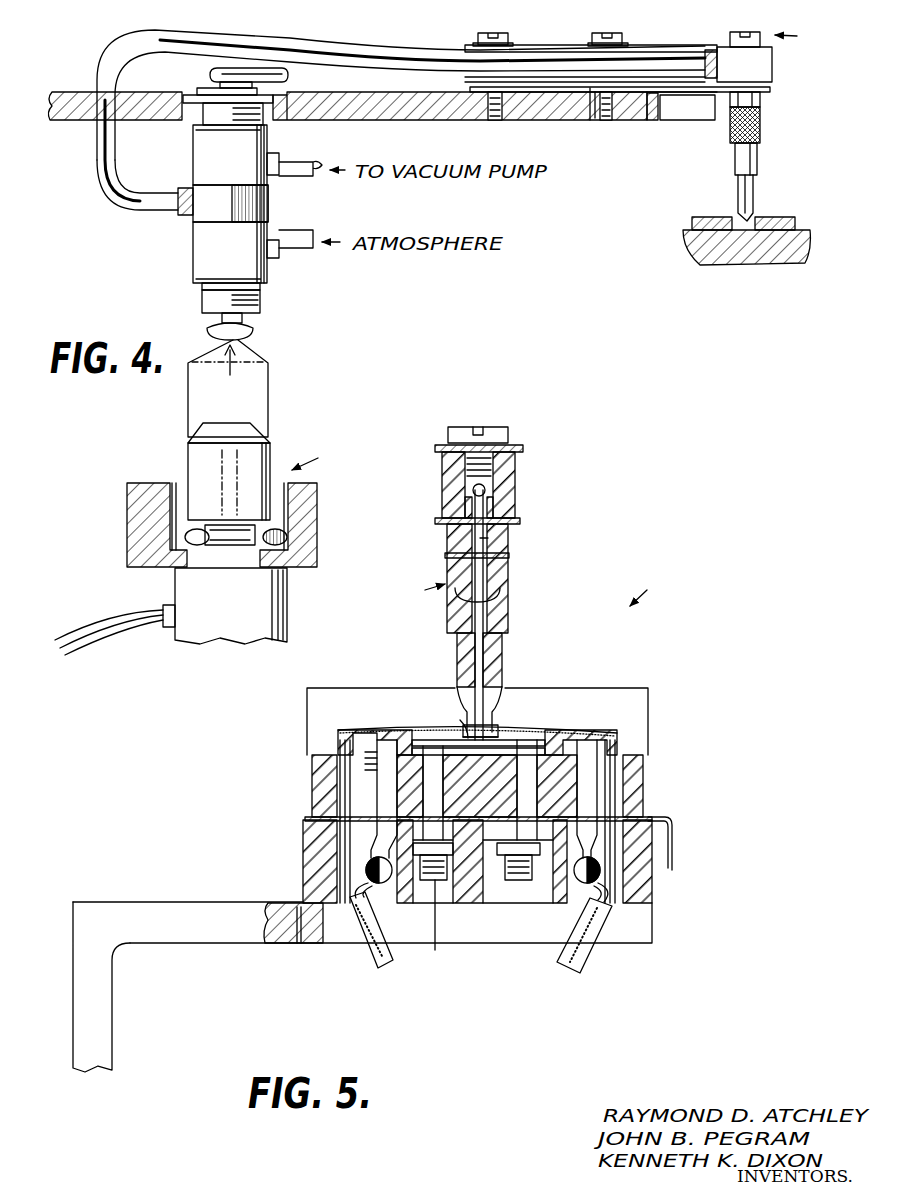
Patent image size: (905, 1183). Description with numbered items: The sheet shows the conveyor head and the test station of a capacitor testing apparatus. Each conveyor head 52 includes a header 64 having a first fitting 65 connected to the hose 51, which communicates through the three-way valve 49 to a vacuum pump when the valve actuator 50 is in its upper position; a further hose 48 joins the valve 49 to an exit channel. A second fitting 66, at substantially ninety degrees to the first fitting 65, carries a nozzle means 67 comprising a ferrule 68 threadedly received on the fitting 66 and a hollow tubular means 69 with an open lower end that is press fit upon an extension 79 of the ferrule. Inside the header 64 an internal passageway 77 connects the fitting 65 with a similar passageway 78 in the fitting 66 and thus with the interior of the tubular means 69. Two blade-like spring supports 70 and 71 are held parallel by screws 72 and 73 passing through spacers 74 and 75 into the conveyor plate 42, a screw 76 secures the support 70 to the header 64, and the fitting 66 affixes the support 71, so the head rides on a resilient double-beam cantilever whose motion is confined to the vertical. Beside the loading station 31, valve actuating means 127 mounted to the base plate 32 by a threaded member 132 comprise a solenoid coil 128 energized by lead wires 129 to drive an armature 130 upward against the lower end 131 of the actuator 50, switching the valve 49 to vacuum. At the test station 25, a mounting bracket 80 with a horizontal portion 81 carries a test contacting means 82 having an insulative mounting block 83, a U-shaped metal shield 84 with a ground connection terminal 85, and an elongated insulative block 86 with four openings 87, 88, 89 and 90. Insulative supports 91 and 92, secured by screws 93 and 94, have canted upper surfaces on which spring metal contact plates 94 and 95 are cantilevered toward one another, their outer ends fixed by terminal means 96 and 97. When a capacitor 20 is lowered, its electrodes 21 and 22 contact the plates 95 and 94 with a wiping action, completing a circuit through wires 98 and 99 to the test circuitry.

In FIG. 4, the capacitor 20 is at (748, 220).
In FIG. 5, the capacitor 20 is at (503, 714).
In FIG. 5, the coated electrode 21 is at (460, 722).
In FIG. 5, the coated electrode 22 is at (500, 728).
In FIG. 5, the test station 25 is at (646, 584).
In FIG. 4, the loading station 31 is at (728, 220).
In FIG. 4, the base plate 32 is at (150, 490).
In FIG. 4, the conveyor plate 42 is at (85, 113).
In FIG. 4, the hose 48 is at (298, 168).
In FIG. 4, the three-way valve 49 is at (195, 242).
In FIG. 4, the valve actuator 50 is at (212, 82).
In FIG. 4, the hose 51 is at (345, 52).
In FIG. 4, the conveyor head 52 is at (801, 37).
In FIG. 5, the conveyor head 52 is at (418, 592).
In FIG. 4, the header 64 is at (767, 63).
In FIG. 5, the header 64 is at (515, 480).
In FIG. 4, the first fitting 65 is at (710, 57).
In FIG. 4, the second fitting 66 is at (762, 99).
In FIG. 5, the second fitting 66 is at (447, 548).
In FIG. 4, the nozzle means 67 is at (765, 152).
In FIG. 4, the ferrule 68 is at (762, 125).
In FIG. 5, the ferrule 68 is at (503, 601).
In FIG. 4, the tubular means 69 is at (755, 166).
In FIG. 5, the tubular means 69 is at (492, 690).
In FIG. 4, the blade spring support 70 is at (550, 47).
In FIG. 5, the blade spring support 70 is at (523, 450).
In FIG. 4, the blade spring support 71 is at (688, 92).
In FIG. 5, the blade spring support 71 is at (520, 521).
In FIG. 4, the screw 72 is at (488, 34).
In FIG. 4, the screw 73 is at (620, 38).
In FIG. 4, the spacer 74 is at (482, 80).
In FIG. 4, the spacer 75 is at (600, 84).
In FIG. 4, the screw 76 is at (748, 22).
In FIG. 5, the screw 76 is at (510, 435).
In FIG. 4, the internal passageway 77 is at (660, 118).
In FIG. 5, the internal passageway 77 is at (484, 489).
In FIG. 5, the passageway 78 is at (486, 537).
In FIG. 5, the extension 79 is at (470, 657).
In FIG. 5, the mounting bracket 80 is at (103, 1008).
In FIG. 5, the horizontal portion 81 is at (195, 908).
In FIG. 5, the test contacting means 82 is at (310, 806).
In FIG. 5, the insulative mounting block 83 is at (320, 862).
In FIG. 5, the U-shaped metal shield 84 is at (637, 704).
In FIG. 5, the ground connection terminal 85 is at (673, 848).
In FIG. 5, the insulative block 86 is at (645, 760).
In FIG. 5, the opening 87 is at (612, 806).
In FIG. 5, the opening 88 is at (485, 848).
In FIG. 5, the opening 89 is at (441, 738).
In FIG. 5, the opening 90 is at (343, 773).
In FIG. 5, the insulative support 91 is at (618, 738).
In FIG. 5, the insulative support 92 is at (338, 743).
In FIG. 5, the screw 93 is at (532, 858).
In FIG. 5, the screw / spring metal contact plate 94 is at (590, 732).
In FIG. 5, the spring metal contact plate 95 is at (400, 730).
In FIG. 5, the terminal means 96 is at (590, 790).
In FIG. 5, the terminal means 97 is at (362, 845).
In FIG. 5, the wire 98 is at (575, 963).
In FIG. 5, the wire 99 is at (380, 960).
In FIG. 4, the valve actuating means 127 is at (323, 453).
In FIG. 4, the solenoid coil 128 is at (242, 625).
In FIG. 4, the lead wires 129 is at (109, 622).
In FIG. 4, the armature 130 is at (265, 442).
In FIG. 4, the lower end of valve actuator 131 is at (258, 331).
In FIG. 4, the threaded member 132 is at (190, 537).